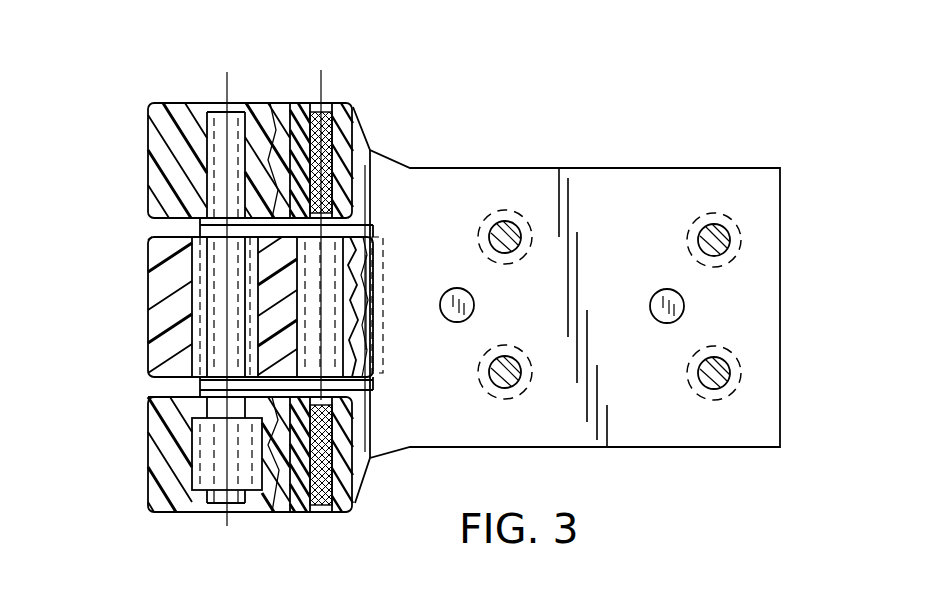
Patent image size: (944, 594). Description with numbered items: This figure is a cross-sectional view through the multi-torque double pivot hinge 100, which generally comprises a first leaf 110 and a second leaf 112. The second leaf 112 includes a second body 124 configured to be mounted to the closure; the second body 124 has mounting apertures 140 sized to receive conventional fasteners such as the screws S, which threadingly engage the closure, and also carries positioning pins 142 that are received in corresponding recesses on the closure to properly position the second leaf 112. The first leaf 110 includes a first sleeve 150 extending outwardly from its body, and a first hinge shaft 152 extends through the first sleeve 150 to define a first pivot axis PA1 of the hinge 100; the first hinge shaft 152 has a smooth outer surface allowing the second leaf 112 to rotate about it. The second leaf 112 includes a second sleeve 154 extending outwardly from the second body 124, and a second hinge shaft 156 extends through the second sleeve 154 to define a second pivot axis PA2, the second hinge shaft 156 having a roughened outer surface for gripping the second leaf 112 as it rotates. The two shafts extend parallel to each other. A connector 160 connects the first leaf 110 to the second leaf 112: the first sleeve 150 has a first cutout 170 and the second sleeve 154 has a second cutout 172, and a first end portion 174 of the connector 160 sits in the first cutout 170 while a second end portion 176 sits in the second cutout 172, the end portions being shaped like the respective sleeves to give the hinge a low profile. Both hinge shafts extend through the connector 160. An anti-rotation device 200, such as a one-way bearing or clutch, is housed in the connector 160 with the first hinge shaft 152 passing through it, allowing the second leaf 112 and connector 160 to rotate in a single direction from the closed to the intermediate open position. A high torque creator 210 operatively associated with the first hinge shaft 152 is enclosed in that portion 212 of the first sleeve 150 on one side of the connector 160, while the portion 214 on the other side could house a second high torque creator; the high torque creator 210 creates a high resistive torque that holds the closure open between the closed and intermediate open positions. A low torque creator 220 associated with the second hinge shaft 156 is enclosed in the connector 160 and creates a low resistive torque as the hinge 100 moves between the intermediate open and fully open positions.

The multi-torque double pivot hinge 100 is at (104, 184).
The first leaf 110 is at (270, 525).
The second leaf 112 is at (632, 462).
The second body 124 is at (622, 188).
The mounting apertures 140 is at (510, 228).
The positioning pins 142 is at (455, 288).
The screws S is at (705, 222).
The first sleeve 150 is at (167, 490).
The first hinge shaft 152 is at (213, 500).
The second sleeve 154 is at (343, 495).
The second hinge shaft 156 is at (320, 495).
The connector 160 is at (140, 308).
The first cutout 170 is at (165, 385).
The second cutout 172 is at (362, 385).
The first end portion 174 is at (158, 281).
The second end portion 176 is at (365, 330).
The anti-rotation device 200 is at (200, 333).
The high torque creator 210 is at (203, 460).
The portion of the first sleeve 212 is at (178, 422).
The portion of the first sleeve 214 is at (188, 140).
The low torque creator 220 is at (340, 282).
The first pivot axis PA1 is at (225, 85).
The second pivot axis PA2 is at (321, 80).